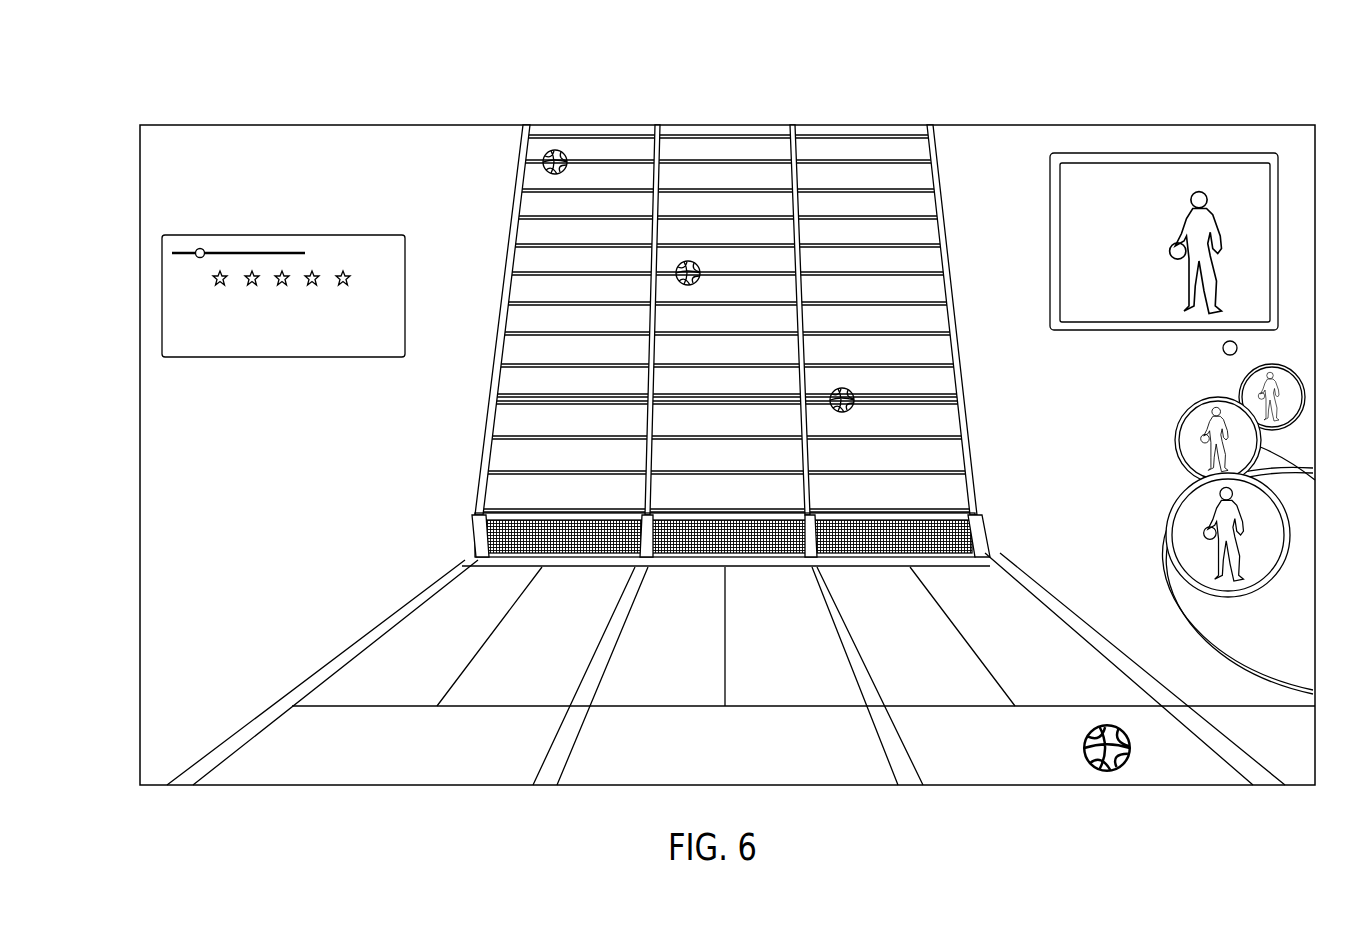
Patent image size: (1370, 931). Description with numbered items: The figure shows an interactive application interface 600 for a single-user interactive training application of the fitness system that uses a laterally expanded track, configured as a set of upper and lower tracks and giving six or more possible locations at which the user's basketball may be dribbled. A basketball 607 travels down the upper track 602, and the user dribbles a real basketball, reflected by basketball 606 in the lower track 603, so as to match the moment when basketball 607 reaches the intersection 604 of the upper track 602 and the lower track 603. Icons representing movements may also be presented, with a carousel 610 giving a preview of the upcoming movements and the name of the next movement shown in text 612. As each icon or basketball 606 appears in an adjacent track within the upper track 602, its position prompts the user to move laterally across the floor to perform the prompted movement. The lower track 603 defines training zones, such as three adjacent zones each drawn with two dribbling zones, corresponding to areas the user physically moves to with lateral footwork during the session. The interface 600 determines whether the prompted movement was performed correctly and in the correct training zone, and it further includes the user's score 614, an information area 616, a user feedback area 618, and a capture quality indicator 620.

The interactive application interface 600 is at (855, 90).
The upper track 602 is at (945, 170).
The lower track 603 is at (1037, 560).
The intersection 604 is at (490, 537).
The basketball 606 is at (1097, 737).
The basketball 607 is at (856, 400).
The carousel 610 is at (1165, 430).
The text 612 is at (1137, 618).
The user's score 614 is at (168, 281).
The information area 616 is at (222, 140).
The user feedback area 618 is at (1265, 160).
The capture quality indicator 620 is at (1290, 348).